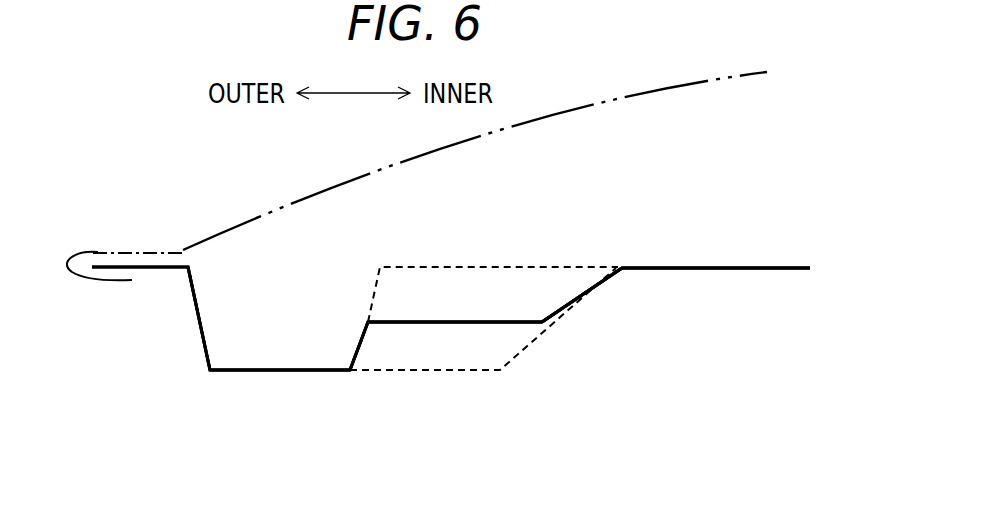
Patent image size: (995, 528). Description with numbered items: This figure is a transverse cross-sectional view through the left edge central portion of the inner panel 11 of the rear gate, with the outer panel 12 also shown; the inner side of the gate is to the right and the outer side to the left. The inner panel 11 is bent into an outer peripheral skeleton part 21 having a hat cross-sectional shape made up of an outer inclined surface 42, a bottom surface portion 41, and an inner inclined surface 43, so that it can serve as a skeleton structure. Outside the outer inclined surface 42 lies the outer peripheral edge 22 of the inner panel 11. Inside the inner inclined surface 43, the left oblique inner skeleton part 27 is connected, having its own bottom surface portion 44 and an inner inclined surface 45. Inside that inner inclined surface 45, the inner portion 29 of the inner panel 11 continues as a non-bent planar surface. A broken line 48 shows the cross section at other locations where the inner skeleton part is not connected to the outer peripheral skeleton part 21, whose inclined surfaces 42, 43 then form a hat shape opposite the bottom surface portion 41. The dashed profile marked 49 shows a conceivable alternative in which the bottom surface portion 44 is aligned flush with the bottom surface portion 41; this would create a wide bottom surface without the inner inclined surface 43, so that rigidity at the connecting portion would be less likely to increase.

The inner panel 11 is at (737, 218).
The outer panel 12 is at (332, 185).
The outer peripheral skeleton part 21 is at (427, 450).
The outer peripheral edge 22 is at (153, 266).
The left oblique inner skeleton part 27 is at (663, 435).
The inner portion 29 is at (687, 268).
The bottom surface portion 41 is at (298, 372).
The outer inclined surface 42 is at (201, 304).
The inner inclined surface 43 is at (360, 340).
The bottom surface portion 44 is at (500, 323).
The inner inclined surface 45 is at (587, 292).
The broken line 48 is at (553, 266).
The flush bottom surface alternative 49 is at (445, 372).